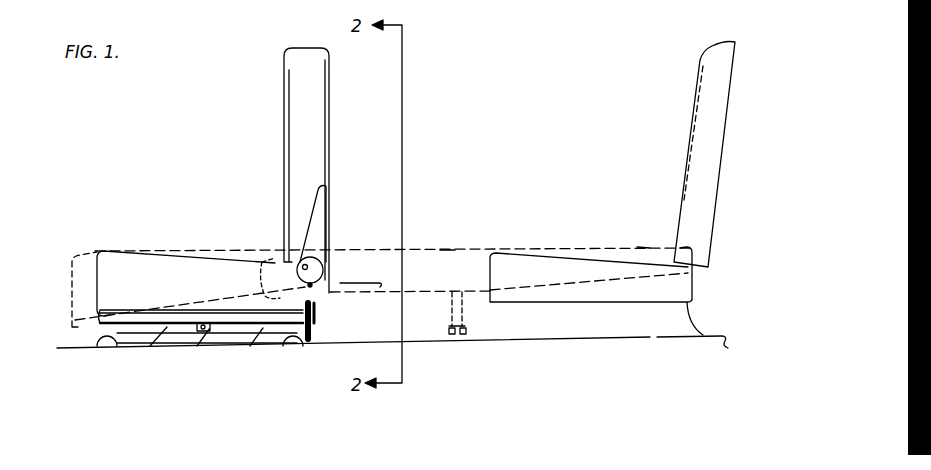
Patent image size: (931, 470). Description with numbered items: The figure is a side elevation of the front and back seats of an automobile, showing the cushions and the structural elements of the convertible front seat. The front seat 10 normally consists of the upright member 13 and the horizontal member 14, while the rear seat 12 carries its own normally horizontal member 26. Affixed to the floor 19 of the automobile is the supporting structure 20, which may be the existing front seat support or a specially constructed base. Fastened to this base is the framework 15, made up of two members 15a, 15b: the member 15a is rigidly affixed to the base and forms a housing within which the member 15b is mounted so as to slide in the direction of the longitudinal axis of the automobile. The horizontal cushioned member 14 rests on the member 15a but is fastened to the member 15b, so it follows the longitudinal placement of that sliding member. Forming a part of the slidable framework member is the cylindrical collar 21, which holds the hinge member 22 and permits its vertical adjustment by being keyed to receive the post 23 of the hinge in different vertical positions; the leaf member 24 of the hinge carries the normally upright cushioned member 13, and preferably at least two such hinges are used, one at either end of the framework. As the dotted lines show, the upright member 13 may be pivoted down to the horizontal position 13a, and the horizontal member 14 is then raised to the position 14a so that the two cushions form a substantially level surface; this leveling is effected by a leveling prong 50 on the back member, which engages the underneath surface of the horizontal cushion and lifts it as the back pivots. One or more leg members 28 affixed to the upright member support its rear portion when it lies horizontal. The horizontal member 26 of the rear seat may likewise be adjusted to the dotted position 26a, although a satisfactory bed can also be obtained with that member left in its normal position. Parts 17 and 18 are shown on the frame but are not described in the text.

The front seat 10 is at (308, 162).
The rear seat 12 is at (700, 60).
The upright member 13 is at (323, 108).
The horizontal position of upright member 13a is at (444, 250).
The horizontal member 14 is at (112, 251).
The adjusted position of horizontal member 14a is at (265, 252).
The framework 15 is at (98, 322).
The framework member 15a is at (160, 327).
The slidable framework member 15b is at (255, 325).
The front roller 17 is at (98, 337).
The rear roller 18 is at (296, 333).
The floor 19 is at (578, 341).
The supporting structure 20 is at (200, 340).
The cylindrical collar 21 is at (318, 312).
The hinge member 22 is at (333, 272).
The post 23 is at (318, 330).
The leaf member 24 is at (322, 232).
The horizontal member of rear seat 26 is at (580, 262).
The adjusted position of rear seat horizontal member 26a is at (637, 247).
The leg member 28 is at (452, 314).
The leveling prong 50 is at (338, 278).